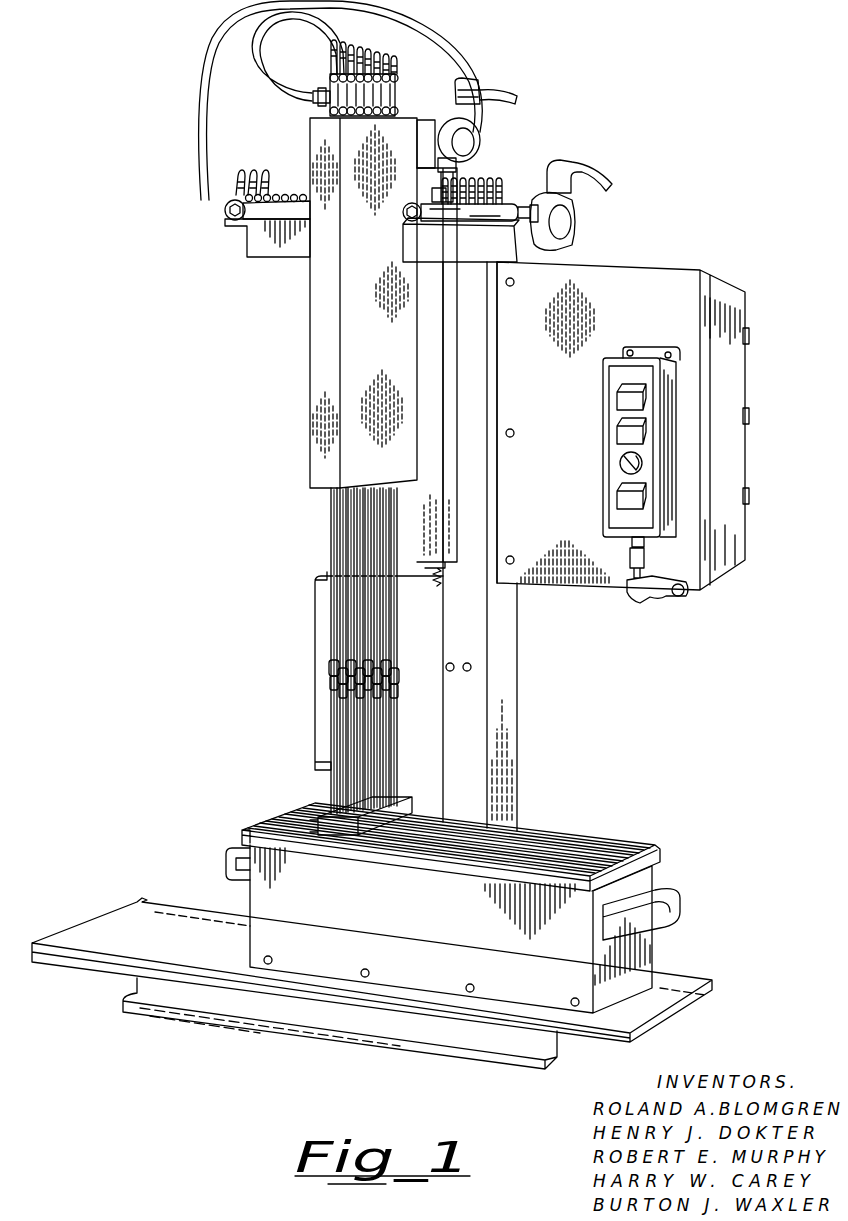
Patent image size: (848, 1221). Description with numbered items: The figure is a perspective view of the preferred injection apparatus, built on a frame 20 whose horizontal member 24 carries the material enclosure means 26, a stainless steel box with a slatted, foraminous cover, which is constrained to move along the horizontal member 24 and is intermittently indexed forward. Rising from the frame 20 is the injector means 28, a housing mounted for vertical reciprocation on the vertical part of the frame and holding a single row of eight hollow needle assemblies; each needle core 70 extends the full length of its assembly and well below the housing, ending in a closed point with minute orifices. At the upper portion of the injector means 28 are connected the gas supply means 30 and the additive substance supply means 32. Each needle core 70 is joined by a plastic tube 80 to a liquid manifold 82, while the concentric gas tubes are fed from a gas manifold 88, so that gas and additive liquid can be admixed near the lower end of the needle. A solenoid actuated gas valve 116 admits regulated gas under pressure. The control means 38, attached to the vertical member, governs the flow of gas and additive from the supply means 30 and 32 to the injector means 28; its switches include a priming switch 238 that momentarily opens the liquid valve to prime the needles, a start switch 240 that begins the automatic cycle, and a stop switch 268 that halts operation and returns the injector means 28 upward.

The frame 20 is at (203, 1025).
The horizontal member 24 is at (470, 1060).
The material enclosure means 26 is at (657, 928).
The injector means 28 is at (311, 339).
The gas supply means 30 is at (584, 162).
The additive substance supply means 32 is at (224, 212).
The control means 38 is at (313, 583).
The needle core 70 is at (330, 795).
The plastic tube 80 is at (399, 71).
The liquid manifold 82 is at (231, 203).
The gas manifold 88 is at (510, 220).
The solenoid actuated gas valve 116 is at (572, 216).
The priming switch 238 is at (662, 497).
The start switch 240 is at (662, 433).
The stop switch 268 is at (662, 395).